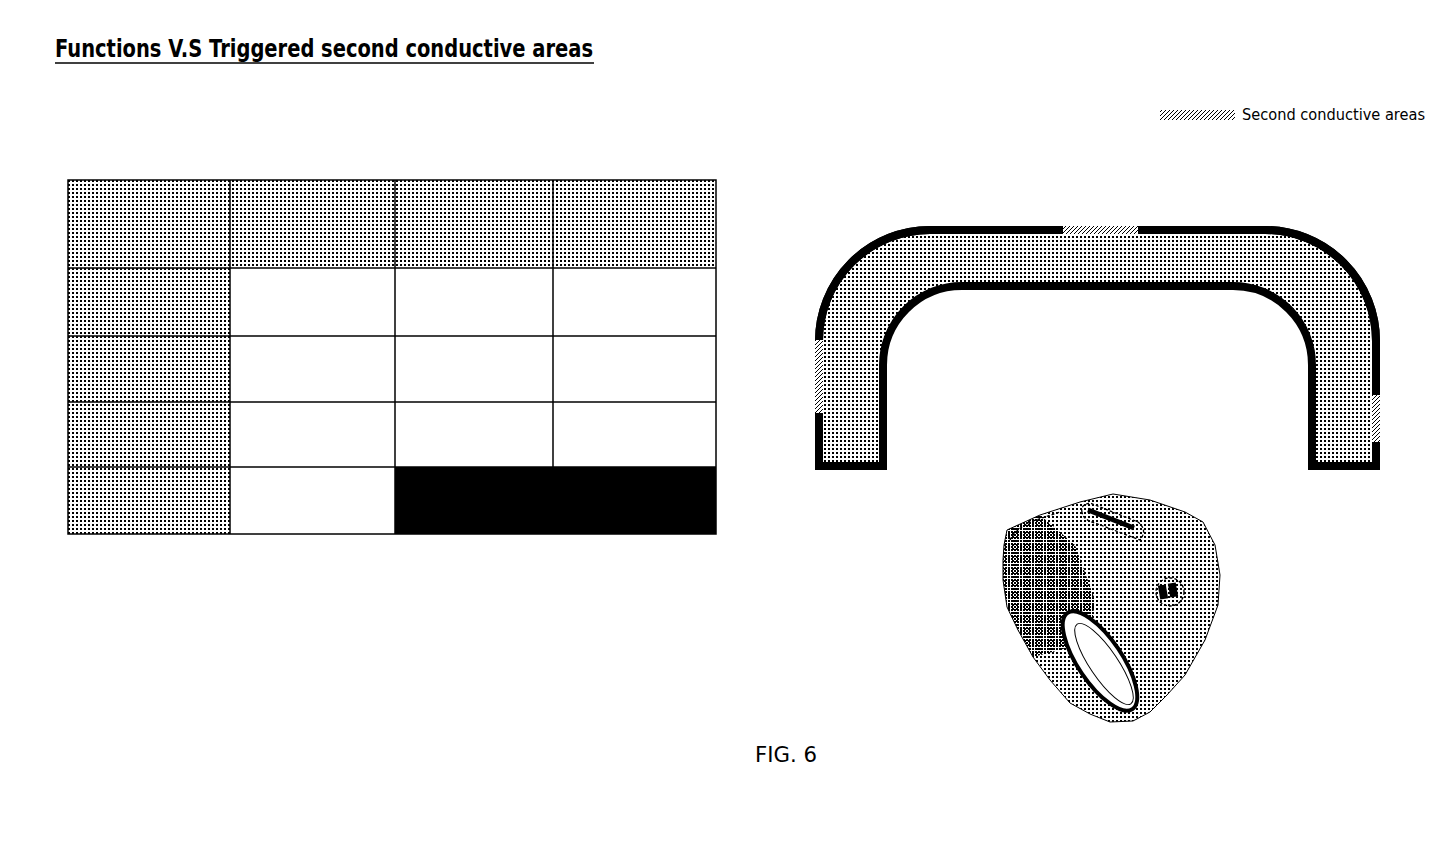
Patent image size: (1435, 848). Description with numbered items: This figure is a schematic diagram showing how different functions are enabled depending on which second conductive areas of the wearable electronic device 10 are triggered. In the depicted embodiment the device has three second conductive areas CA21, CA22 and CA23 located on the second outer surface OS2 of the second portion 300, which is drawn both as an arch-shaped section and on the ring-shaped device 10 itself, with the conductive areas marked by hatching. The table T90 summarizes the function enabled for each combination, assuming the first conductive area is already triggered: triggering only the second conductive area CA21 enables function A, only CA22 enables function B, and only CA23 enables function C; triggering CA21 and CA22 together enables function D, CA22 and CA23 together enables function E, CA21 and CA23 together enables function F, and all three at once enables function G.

The table T90 is at (717, 180).
The second portion 300 is at (1340, 262).
The second outer surface OS2 is at (941, 220).
The second conductive area CA21 is at (820, 378).
The second conductive area CA22 is at (1098, 226).
The second conductive area CA23 is at (1382, 418).
The wearable electronic device 10 is at (1120, 496).